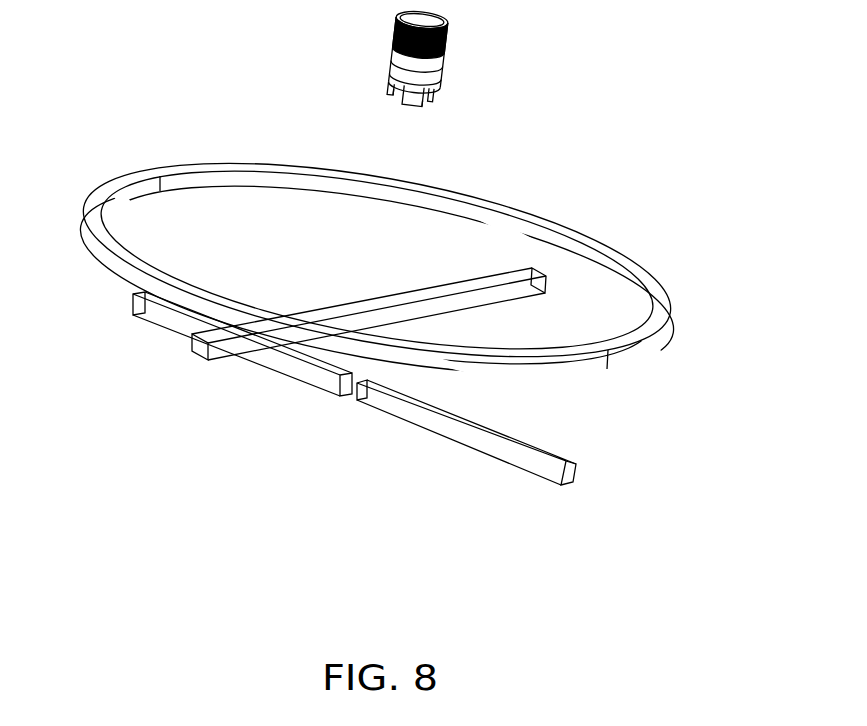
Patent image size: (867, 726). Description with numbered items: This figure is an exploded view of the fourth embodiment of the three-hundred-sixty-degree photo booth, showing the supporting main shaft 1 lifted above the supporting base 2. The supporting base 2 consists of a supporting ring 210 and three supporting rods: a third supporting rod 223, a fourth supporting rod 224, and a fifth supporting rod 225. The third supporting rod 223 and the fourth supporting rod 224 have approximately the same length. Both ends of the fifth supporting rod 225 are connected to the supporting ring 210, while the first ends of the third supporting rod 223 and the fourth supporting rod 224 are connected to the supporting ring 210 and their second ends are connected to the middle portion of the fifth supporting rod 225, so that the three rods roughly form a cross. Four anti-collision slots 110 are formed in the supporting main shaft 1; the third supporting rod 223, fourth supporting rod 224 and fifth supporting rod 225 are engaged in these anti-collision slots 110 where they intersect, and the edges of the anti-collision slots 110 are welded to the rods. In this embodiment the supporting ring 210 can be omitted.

The supporting main shaft 1 is at (428, 67).
The anti-collision slot 110 is at (428, 102).
The supporting base 2 is at (377, 380).
The supporting ring 210 is at (185, 298).
The third supporting rod 223 is at (277, 365).
The fourth supporting rod 224 is at (471, 467).
The fifth supporting rod 225 is at (390, 312).